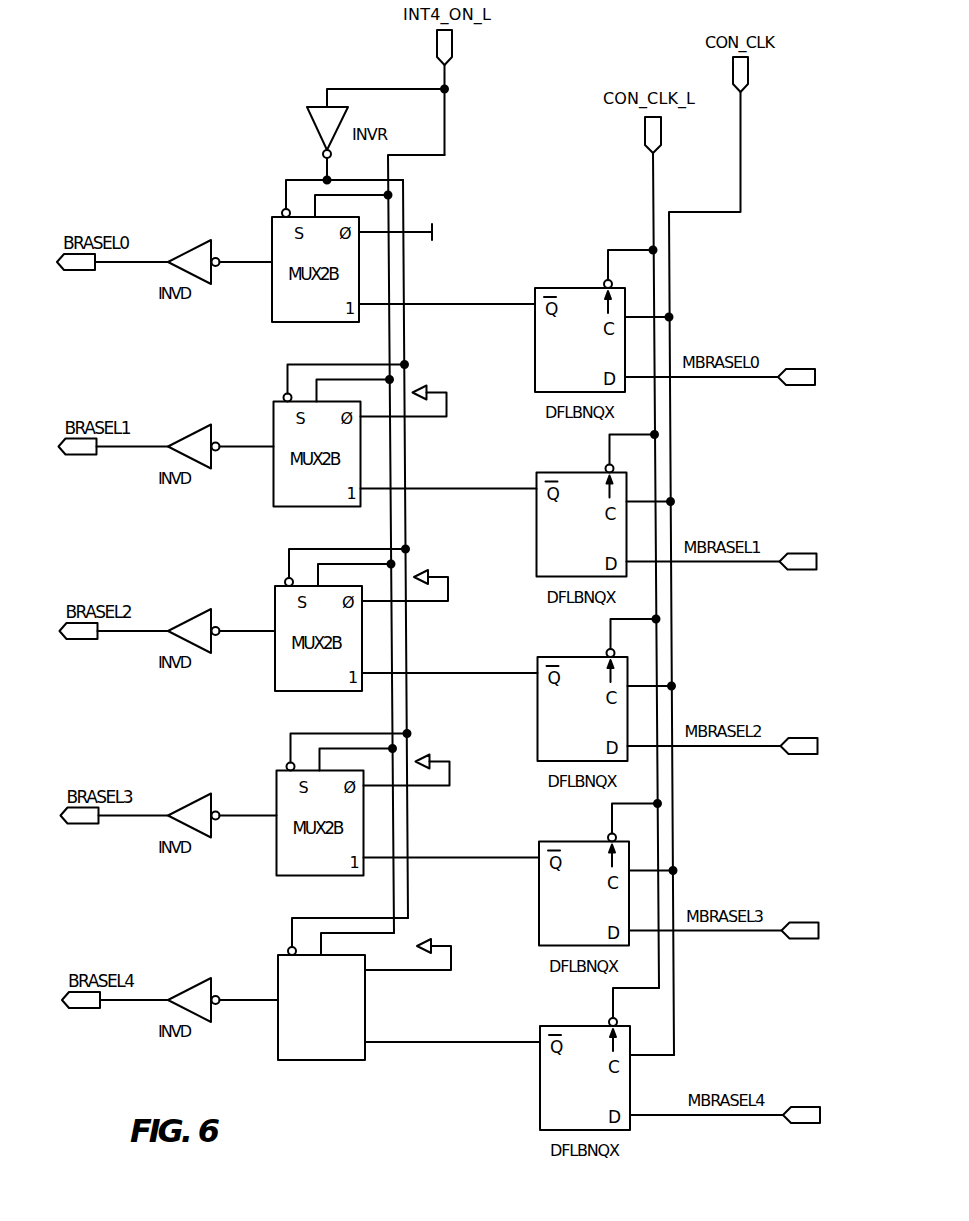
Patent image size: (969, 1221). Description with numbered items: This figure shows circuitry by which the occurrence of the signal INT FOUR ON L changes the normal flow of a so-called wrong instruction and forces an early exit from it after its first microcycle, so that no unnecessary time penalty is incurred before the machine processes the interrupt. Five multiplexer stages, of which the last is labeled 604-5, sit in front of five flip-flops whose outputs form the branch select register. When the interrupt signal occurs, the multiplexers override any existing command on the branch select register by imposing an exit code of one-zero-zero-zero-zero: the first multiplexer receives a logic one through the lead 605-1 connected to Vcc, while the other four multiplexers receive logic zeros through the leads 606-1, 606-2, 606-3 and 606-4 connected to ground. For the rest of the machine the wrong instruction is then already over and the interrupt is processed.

The lead 605-1 is at (432, 232).
The lead 606-1 is at (434, 416).
The lead 606-2 is at (436, 601).
The lead 606-3 is at (437, 786).
The lead 606-4 is at (438, 970).
The fifth multiplexer MUX2B 604-5 is at (320, 1060).